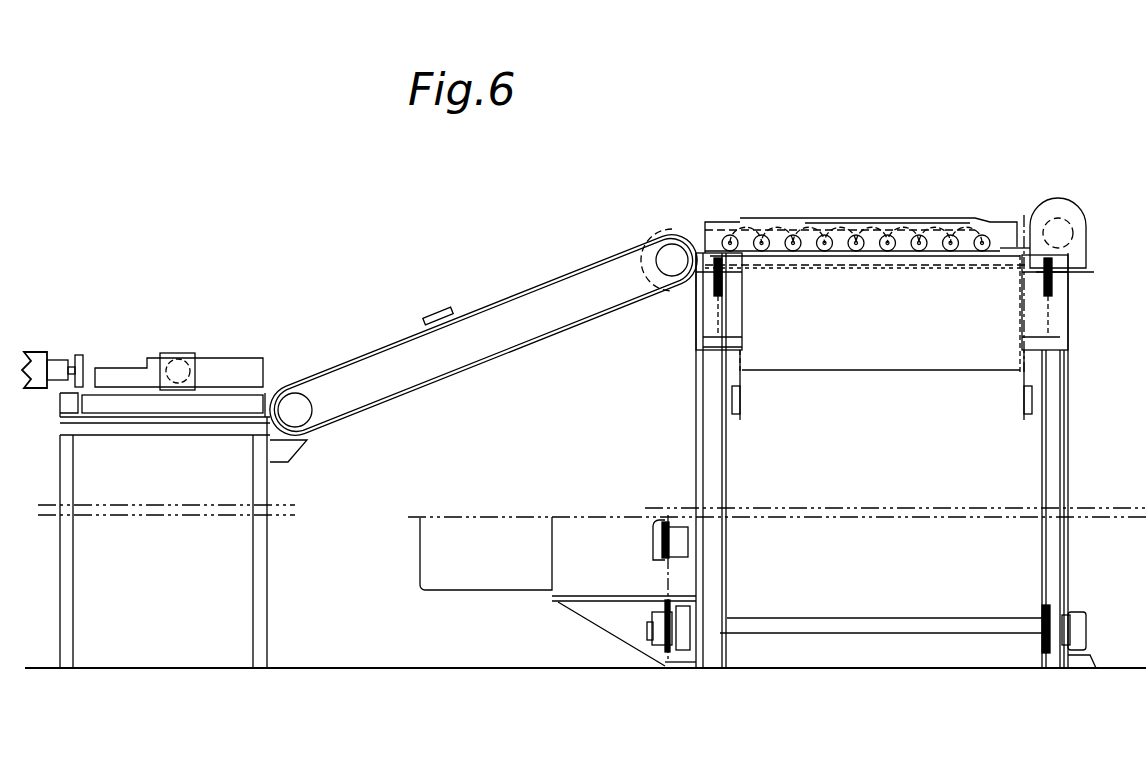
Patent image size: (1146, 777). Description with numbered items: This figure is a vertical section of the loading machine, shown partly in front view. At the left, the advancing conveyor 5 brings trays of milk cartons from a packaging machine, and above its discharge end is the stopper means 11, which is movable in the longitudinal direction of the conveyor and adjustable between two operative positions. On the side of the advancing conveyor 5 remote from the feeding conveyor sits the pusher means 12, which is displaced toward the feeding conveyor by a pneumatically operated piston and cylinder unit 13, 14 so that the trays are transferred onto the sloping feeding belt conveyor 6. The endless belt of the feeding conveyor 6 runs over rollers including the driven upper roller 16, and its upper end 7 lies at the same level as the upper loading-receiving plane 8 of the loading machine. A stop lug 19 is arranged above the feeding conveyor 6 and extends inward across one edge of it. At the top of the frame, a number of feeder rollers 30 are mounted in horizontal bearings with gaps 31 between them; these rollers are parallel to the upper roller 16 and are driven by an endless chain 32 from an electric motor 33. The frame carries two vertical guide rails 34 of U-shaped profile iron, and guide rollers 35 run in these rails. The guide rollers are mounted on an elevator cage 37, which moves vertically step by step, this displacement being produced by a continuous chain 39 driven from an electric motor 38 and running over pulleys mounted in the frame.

The advancing conveyor 5 is at (200, 400).
The feeding belt conveyor 6 is at (335, 375).
The upper end of feeder belt conveyor 7 is at (655, 243).
The upper loading-receiving plane 8 is at (695, 226).
The stopper means 11 is at (228, 372).
The pusher means 12 is at (83, 358).
The piston of pneumatic piston and cylinder unit 13 is at (73, 364).
The cylinder of pneumatic piston and cylinder unit 14 is at (33, 352).
The upper roller 16 is at (672, 262).
The stop lug 19 is at (432, 312).
The feeder rollers 30 is at (772, 234).
The gaps 31 is at (875, 232).
The endless chain 32 is at (905, 215).
The electric motor 33 is at (1043, 208).
The vertical guide rails 34 is at (728, 455).
The guide rollers 35 is at (735, 418).
The elevator cage 37 is at (840, 374).
The electric motor 38 is at (565, 576).
The continuous chain 39 is at (718, 548).